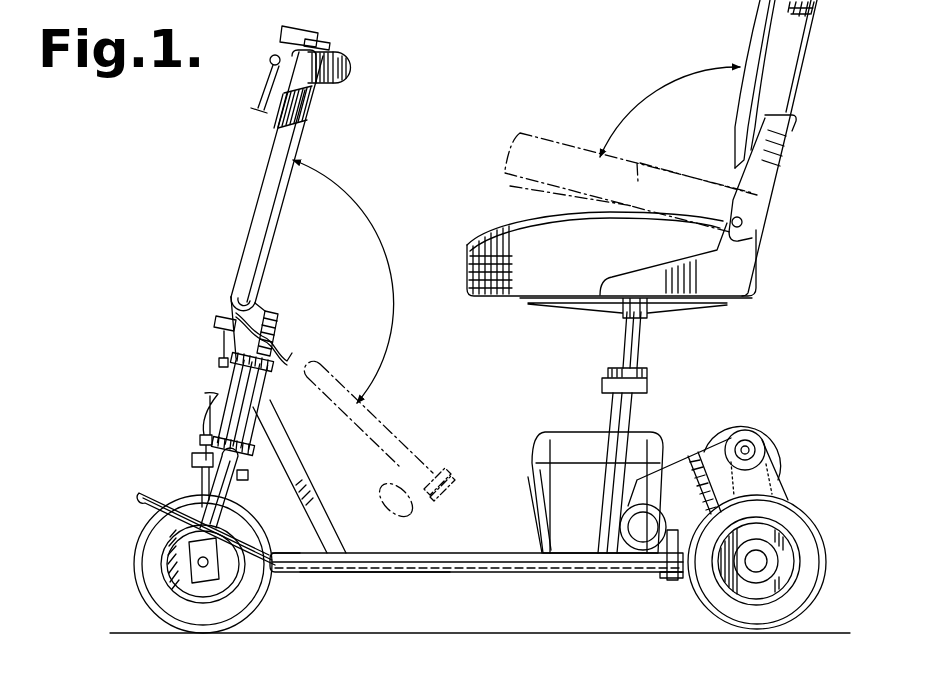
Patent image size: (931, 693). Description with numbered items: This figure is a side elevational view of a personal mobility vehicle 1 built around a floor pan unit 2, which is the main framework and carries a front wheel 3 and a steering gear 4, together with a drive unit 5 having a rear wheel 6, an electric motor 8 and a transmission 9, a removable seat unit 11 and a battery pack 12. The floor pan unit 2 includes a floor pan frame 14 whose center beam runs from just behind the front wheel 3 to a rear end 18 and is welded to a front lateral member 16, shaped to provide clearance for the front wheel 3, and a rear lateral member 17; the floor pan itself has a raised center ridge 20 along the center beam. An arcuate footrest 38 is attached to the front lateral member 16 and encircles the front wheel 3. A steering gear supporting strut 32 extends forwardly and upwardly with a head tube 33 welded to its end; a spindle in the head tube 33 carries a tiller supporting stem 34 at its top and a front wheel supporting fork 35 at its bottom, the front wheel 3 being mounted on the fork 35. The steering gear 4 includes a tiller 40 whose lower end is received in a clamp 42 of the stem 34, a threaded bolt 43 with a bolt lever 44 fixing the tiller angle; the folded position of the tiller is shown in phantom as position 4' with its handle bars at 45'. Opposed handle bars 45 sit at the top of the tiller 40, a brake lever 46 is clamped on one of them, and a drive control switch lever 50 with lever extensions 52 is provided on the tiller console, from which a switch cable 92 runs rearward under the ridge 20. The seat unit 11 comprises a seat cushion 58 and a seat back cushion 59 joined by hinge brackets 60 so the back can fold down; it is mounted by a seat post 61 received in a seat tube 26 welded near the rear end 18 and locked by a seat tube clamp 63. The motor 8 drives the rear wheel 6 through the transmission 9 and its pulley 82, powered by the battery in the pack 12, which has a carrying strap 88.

The personal mobility vehicle 1 is at (176, 203).
The floor pan unit 2 is at (503, 576).
The front wheel 3 is at (138, 601).
The steering gear 4 is at (273, 327).
The steering column in folded position 4' is at (363, 316).
The drive unit 5 is at (823, 531).
The rear wheel 6 is at (814, 602).
The electric motor 8 is at (648, 505).
The transmission 9 is at (773, 429).
The seat unit 11 is at (807, 57).
The battery pack 12 is at (537, 430).
The floor pan frame 14 is at (362, 577).
The front lateral member 16 is at (308, 581).
The rear lateral member 17 is at (676, 581).
The rear end 18 is at (650, 573).
The raised center ridge 20 is at (487, 569).
The seat tube 26 is at (613, 416).
The steering gear supporting strut 32 is at (322, 521).
The head tube 33 is at (234, 389).
The tiller supporting stem 34 is at (267, 311).
The front wheel supporting fork 35 is at (238, 498).
The arcuate footrest 38 is at (140, 500).
The tiller 40 is at (273, 173).
The clamp 42 is at (236, 305).
The threaded bolt 43 is at (215, 325).
The bolt lever 44 is at (220, 347).
The handle bars 45 is at (341, 66).
The handlebar grip in folded position 45' is at (414, 509).
The brake lever 46 is at (271, 57).
The drive control switch lever 50 is at (303, 28).
The lever extensions 52 is at (330, 42).
The seat cushion 58 is at (468, 264).
The seat back cushion 59 is at (752, 30).
The hinge brackets 60 is at (770, 227).
The seat post 61 is at (643, 343).
The seat tube clamp 63 is at (650, 388).
The motor pulley 82 is at (766, 448).
The handle or strap 88 is at (530, 494).
The switch cable 92 is at (287, 360).